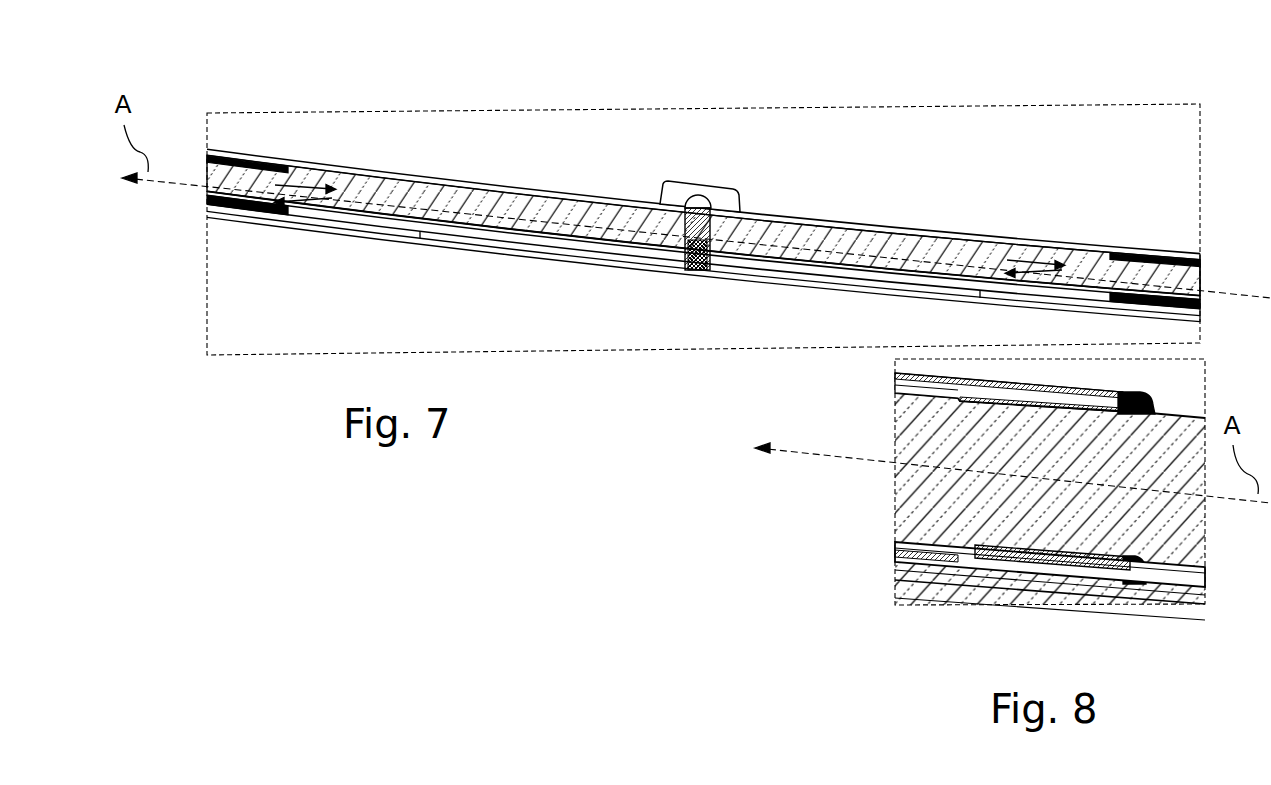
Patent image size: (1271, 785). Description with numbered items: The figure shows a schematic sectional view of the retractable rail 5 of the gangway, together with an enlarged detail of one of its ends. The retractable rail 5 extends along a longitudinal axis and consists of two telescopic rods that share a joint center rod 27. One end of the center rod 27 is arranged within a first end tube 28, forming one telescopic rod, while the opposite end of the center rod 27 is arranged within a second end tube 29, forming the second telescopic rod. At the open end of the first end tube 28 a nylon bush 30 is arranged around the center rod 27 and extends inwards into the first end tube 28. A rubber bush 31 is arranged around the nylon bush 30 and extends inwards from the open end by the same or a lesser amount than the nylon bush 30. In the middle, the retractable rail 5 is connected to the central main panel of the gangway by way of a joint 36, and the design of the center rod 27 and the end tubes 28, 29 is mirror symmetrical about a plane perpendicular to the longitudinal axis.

In FIG. 7, the retractable rail 5 is at (541, 198).
In FIG. 8, the retractable rail 5 is at (915, 473).
In FIG. 7, the center rod 27 is at (992, 242).
In FIG. 8, the center rod 27 is at (937, 570).
In FIG. 7, the first end tube 28 is at (267, 157).
In FIG. 8, the first end tube 28 is at (897, 382).
In FIG. 7, the second end tube 29 is at (1140, 248).
In FIG. 7, the nylon bush 30 is at (292, 163).
In FIG. 8, the nylon bush 30 is at (1130, 580).
In FIG. 8, the rubber bush 31 is at (1042, 580).
In FIG. 7, the joint 36 is at (713, 182).